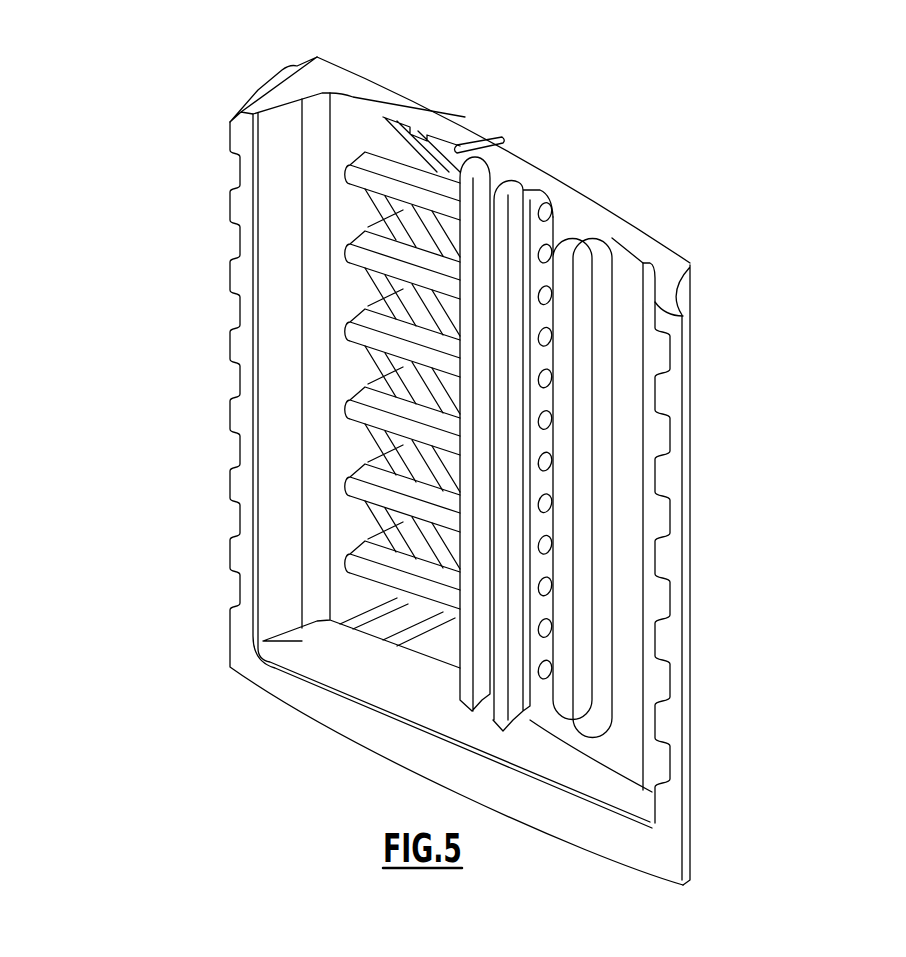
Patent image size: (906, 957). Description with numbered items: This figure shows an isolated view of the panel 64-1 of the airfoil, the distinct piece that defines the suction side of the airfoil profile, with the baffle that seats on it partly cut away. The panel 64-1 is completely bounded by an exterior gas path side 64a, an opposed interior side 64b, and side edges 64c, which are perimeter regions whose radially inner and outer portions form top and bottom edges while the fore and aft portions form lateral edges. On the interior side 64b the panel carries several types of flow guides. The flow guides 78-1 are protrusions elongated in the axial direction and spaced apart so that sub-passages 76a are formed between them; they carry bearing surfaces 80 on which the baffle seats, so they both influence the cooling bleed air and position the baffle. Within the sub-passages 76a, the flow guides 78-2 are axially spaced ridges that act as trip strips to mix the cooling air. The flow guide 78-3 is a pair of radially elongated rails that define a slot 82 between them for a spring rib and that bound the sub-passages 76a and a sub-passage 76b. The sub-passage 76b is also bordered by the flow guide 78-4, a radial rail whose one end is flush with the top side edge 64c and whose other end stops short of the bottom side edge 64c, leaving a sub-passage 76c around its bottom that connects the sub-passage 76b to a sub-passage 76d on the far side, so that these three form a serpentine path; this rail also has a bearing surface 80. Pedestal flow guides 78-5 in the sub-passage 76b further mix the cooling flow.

The panel 64-1 is at (150, 763).
The exterior gas path side 64a is at (466, 118).
The interior side 64b is at (370, 333).
The side edges 64c is at (553, 180).
The sub-passages 76a is at (375, 293).
The sub-passage 76b is at (533, 292).
The sub-passage 76c is at (585, 768).
The sub-passage 76d is at (628, 645).
The flow guides 78-1 is at (372, 165).
The flow guides 78-2 is at (390, 462).
The flow guide 78-3 is at (460, 668).
The flow guide 78-4 is at (578, 530).
The flow guides 78-5 is at (552, 465).
The bearing surfaces 80 is at (372, 160).
The slot 82 is at (484, 190).